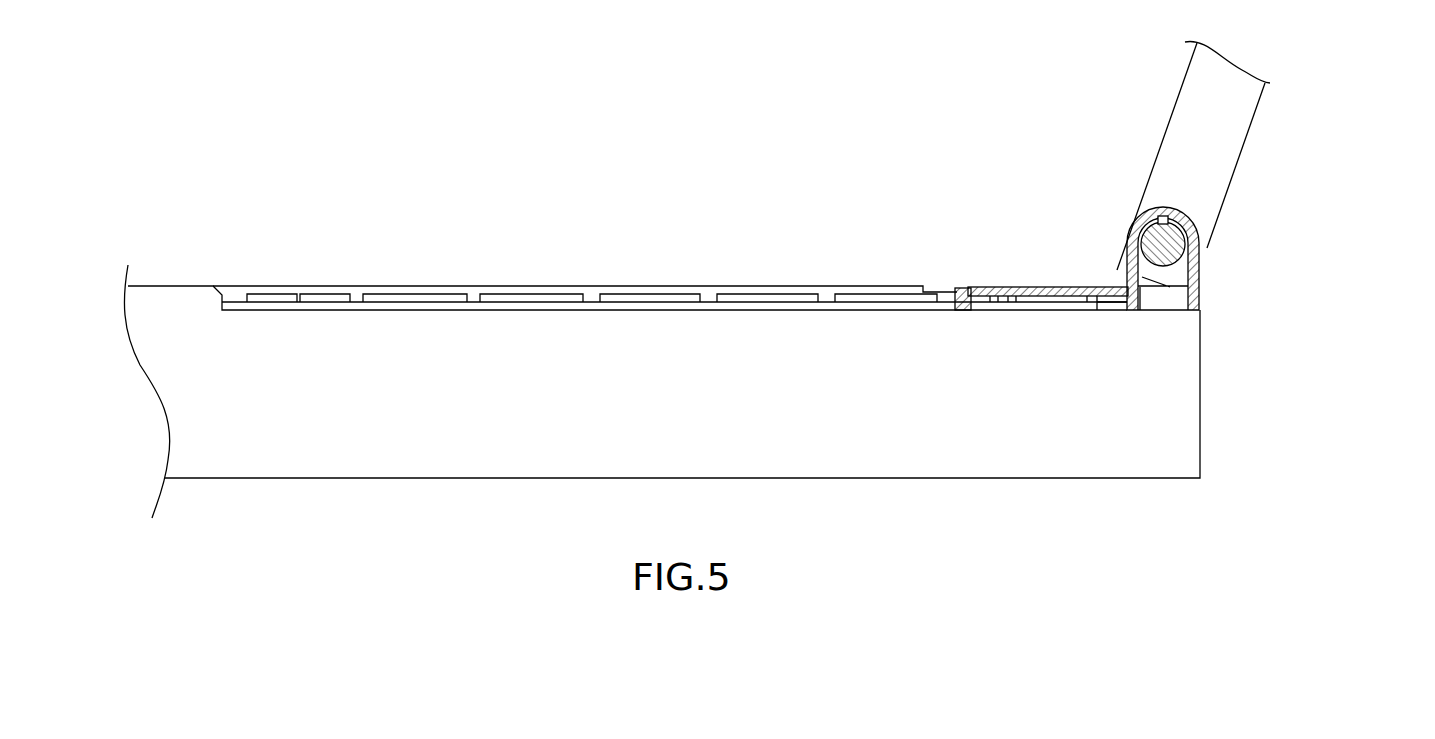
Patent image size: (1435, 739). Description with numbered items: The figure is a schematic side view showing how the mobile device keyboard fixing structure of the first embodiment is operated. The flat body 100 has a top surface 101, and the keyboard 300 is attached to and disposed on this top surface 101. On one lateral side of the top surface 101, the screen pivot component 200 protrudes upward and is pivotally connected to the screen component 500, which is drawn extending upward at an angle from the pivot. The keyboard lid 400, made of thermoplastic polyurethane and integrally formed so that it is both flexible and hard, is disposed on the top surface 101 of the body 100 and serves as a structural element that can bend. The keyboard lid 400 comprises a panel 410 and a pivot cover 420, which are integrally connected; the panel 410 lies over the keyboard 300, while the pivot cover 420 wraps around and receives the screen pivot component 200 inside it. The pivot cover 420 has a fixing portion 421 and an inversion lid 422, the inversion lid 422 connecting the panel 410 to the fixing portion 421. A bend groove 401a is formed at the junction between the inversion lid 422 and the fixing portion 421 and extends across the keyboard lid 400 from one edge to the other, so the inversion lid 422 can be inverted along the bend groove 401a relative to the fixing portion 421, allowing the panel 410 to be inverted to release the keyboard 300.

The body 100 is at (1053, 445).
The top surface 101 is at (368, 286).
The screen pivot component 200 is at (1172, 302).
The keyboard 300 is at (523, 310).
The keyboard lid 400 is at (1088, 284).
The bend groove 401a is at (1162, 216).
The panel 410 is at (1010, 282).
The pivot cover 420 is at (1266, 225).
The fixing portion 421 is at (1200, 230).
The inversion lid 422 is at (1137, 220).
The screen component 500 is at (1187, 117).